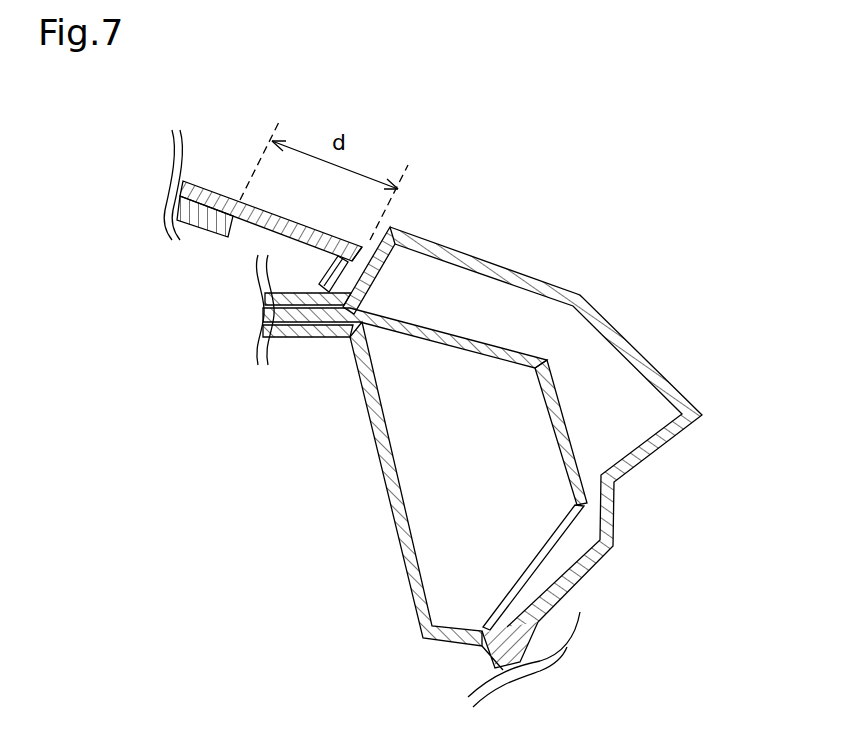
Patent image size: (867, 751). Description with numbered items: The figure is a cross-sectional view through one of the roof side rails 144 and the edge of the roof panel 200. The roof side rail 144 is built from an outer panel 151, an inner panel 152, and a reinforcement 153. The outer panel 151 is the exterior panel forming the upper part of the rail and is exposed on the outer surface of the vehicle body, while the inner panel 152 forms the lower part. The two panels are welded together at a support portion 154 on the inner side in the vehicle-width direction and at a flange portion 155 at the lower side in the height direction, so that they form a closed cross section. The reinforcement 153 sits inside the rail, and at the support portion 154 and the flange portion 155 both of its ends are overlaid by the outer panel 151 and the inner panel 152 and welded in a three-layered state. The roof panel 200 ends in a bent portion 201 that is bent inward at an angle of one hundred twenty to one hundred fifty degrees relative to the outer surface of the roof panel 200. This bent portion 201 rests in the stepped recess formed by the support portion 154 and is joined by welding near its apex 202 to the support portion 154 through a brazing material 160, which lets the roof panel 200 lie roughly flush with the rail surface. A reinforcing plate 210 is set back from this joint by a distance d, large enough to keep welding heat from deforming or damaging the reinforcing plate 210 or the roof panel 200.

The roof side rail 144 is at (618, 218).
The outer panel 151 is at (627, 341).
The inner panel 152 is at (560, 407).
The reinforcement 153 is at (385, 485).
The support portion 154 is at (335, 335).
The flange portion 155 is at (523, 632).
The brazing material 160 is at (392, 227).
The roof panel 200 is at (205, 188).
The bent portion 201 is at (332, 255).
The apex 202 is at (368, 249).
The reinforcing plate 210 is at (208, 225).